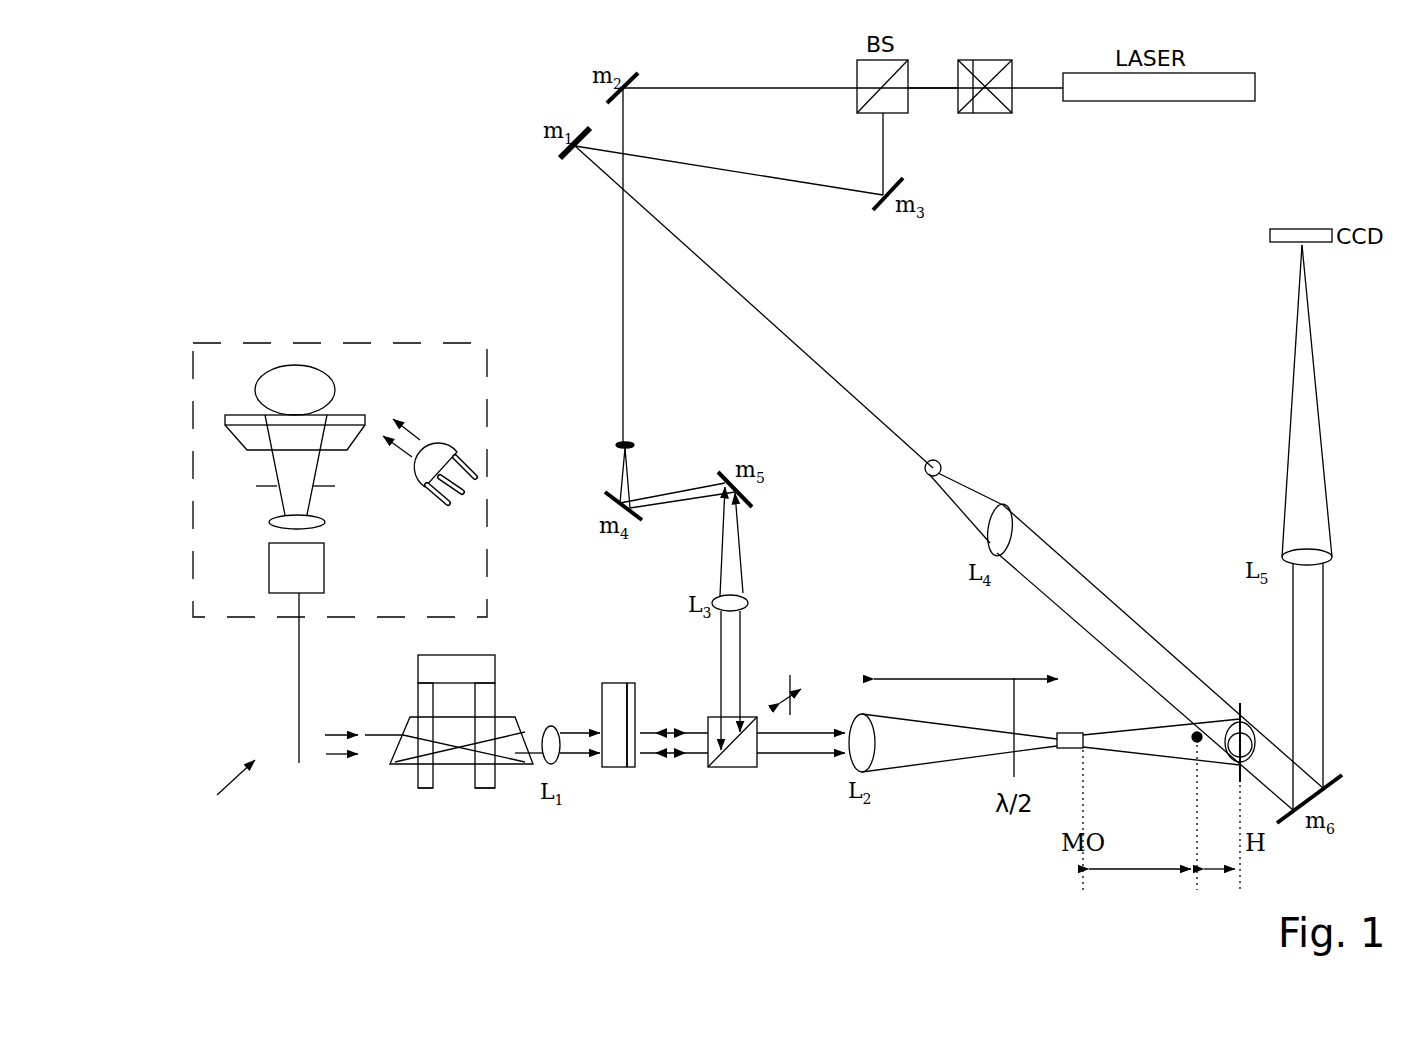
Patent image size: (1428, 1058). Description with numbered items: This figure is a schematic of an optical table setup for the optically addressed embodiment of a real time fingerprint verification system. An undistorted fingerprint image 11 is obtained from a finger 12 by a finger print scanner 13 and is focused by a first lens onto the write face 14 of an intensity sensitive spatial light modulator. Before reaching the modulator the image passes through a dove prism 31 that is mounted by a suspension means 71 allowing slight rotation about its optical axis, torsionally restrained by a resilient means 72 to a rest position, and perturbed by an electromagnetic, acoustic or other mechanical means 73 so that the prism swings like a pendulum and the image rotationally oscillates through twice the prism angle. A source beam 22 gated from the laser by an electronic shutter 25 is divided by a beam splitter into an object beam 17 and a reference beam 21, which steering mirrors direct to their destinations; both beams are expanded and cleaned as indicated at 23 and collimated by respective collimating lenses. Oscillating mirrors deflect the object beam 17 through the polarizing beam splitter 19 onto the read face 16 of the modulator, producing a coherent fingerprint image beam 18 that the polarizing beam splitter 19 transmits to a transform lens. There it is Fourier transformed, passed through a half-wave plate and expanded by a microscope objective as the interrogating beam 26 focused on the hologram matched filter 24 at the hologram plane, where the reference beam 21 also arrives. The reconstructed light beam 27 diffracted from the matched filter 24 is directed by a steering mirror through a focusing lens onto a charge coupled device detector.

The undistorted fingerprint image 11 is at (229, 794).
The finger 12 is at (309, 403).
The finger print scanner 13 is at (463, 404).
The write face 14 is at (617, 683).
The read face 16 is at (635, 768).
The object beam 17 is at (714, 88).
The coherent fingerprint image beam 18 is at (683, 728).
The polarizing beam splitter 19 is at (739, 768).
The reference beam 21 is at (722, 169).
The source beam 22 is at (932, 90).
The beam expanding and cleaning means 23 is at (633, 444).
The hologram matched filter 24 is at (1244, 716).
The electronic shutter 25 is at (977, 113).
The object/interrogating beam 26 is at (1166, 756).
The reconstructed light beam 27 is at (1325, 720).
The dove prism 31 is at (475, 741).
The suspension means 71 is at (478, 790).
The resilient means 72 is at (495, 684).
The perturbing means 73 is at (473, 660).